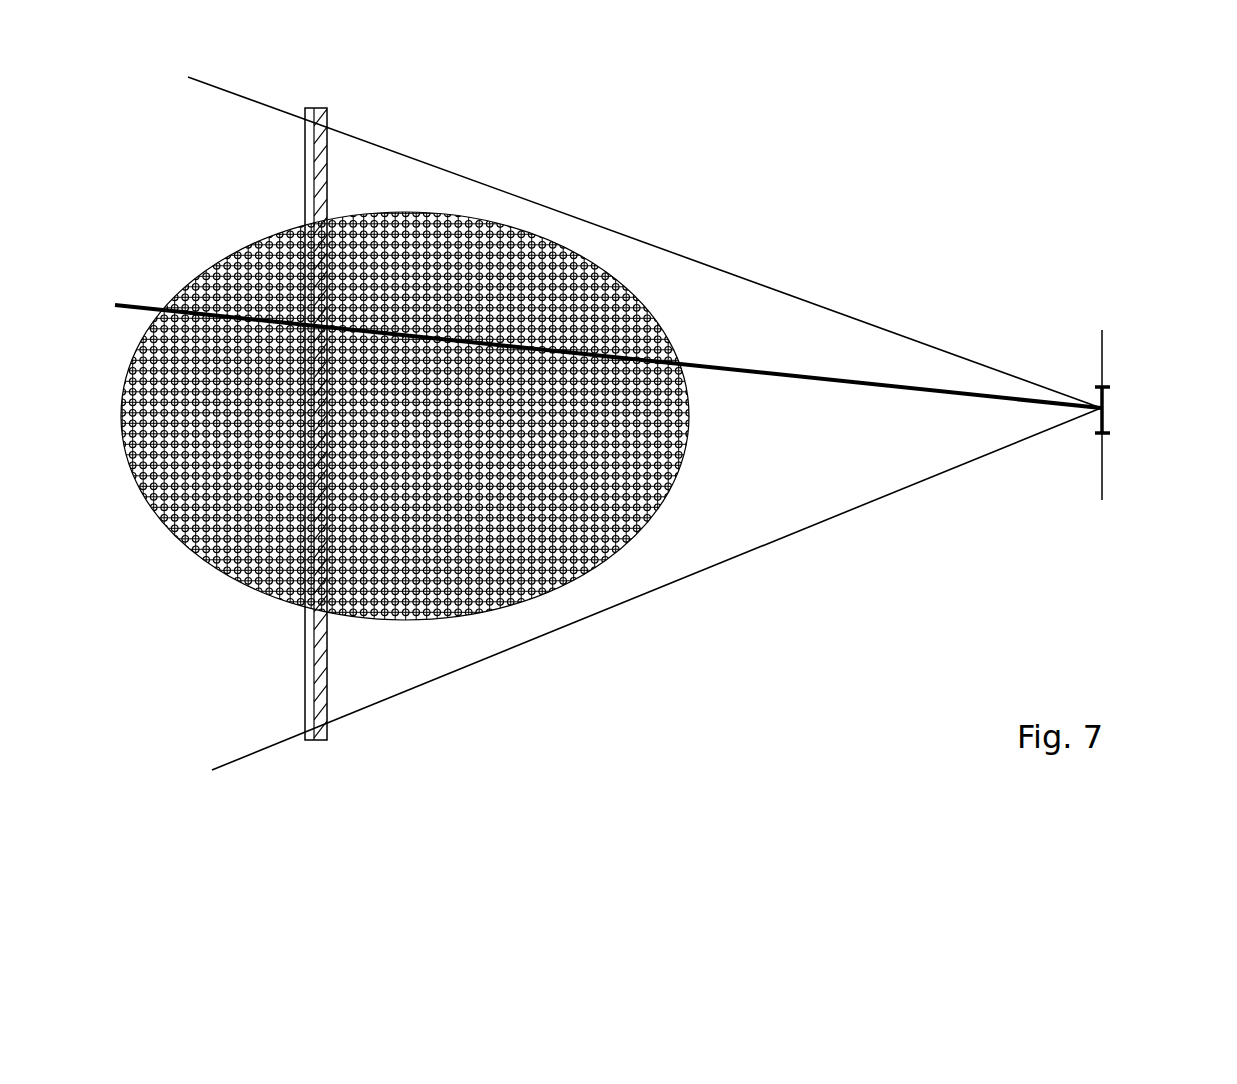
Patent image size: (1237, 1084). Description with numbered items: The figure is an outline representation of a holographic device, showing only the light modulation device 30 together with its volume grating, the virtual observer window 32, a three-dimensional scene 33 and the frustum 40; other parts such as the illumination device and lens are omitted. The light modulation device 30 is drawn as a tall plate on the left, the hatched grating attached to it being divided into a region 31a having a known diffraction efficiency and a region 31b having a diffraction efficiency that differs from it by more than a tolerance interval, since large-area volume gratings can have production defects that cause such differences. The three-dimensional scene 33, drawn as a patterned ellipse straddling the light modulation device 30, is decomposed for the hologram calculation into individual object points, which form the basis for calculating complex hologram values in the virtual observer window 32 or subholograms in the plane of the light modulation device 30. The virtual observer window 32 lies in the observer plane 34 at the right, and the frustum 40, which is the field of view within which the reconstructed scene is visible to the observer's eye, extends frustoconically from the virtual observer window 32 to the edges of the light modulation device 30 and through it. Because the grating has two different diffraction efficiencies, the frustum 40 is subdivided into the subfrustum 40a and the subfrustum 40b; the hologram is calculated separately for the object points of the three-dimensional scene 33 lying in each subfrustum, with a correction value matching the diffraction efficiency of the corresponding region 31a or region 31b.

The light modulation device 30 is at (313, 110).
The region of the volume grating 31a is at (325, 653).
The region of the volume grating 31b is at (323, 160).
The virtual observer window 32 is at (1103, 415).
The three-dimensional scene 33 is at (284, 568).
The observer plane 34 is at (1103, 355).
The frustum 40 is at (608, 423).
The subfrustum 40a is at (765, 502).
The subfrustum 40b is at (763, 331).